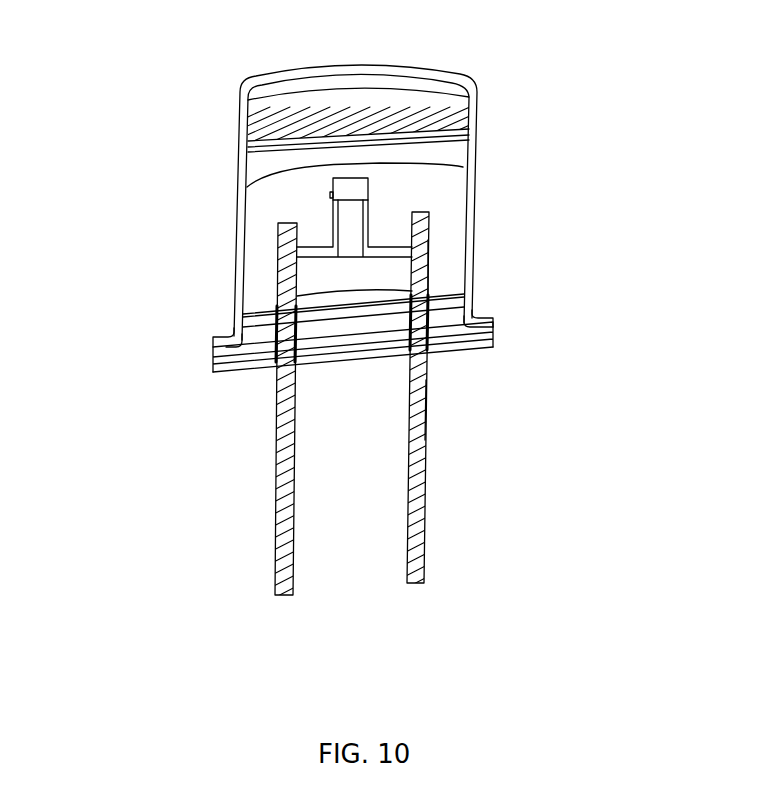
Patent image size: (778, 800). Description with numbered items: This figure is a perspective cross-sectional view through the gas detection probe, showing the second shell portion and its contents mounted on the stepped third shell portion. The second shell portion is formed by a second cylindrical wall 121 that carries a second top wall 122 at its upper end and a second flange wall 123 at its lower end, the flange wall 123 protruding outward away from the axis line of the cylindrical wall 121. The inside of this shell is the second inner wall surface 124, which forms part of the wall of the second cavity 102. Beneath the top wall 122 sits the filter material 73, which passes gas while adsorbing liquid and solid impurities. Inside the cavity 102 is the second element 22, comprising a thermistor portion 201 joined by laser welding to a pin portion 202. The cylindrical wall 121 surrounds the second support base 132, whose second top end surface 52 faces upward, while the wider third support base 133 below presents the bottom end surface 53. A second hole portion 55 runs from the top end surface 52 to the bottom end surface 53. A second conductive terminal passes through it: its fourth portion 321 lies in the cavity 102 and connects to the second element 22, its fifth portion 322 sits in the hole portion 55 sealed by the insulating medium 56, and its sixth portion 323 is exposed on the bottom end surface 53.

The second top wall 122 is at (283, 82).
The second cylindrical wall 121 is at (238, 207).
The second flange wall 123 is at (223, 347).
The second inner wall surface 124 is at (462, 212).
The insulating medium 56 is at (472, 317).
The filter material 73 is at (470, 99).
The thermistor portion 201 is at (241, 122).
The pin portion 202 is at (333, 237).
The second element 22 is at (345, 190).
The second cavity 102 is at (438, 188).
The second top end surface 52 is at (270, 306).
The second support base 132 is at (257, 330).
The fifth portion 322 is at (440, 292).
The second hole portion 55 is at (408, 372).
The fourth portion 321 is at (430, 260).
The sixth portion 323 is at (424, 408).
The bottom end surface 53 is at (450, 350).
The third support base 133 is at (257, 367).